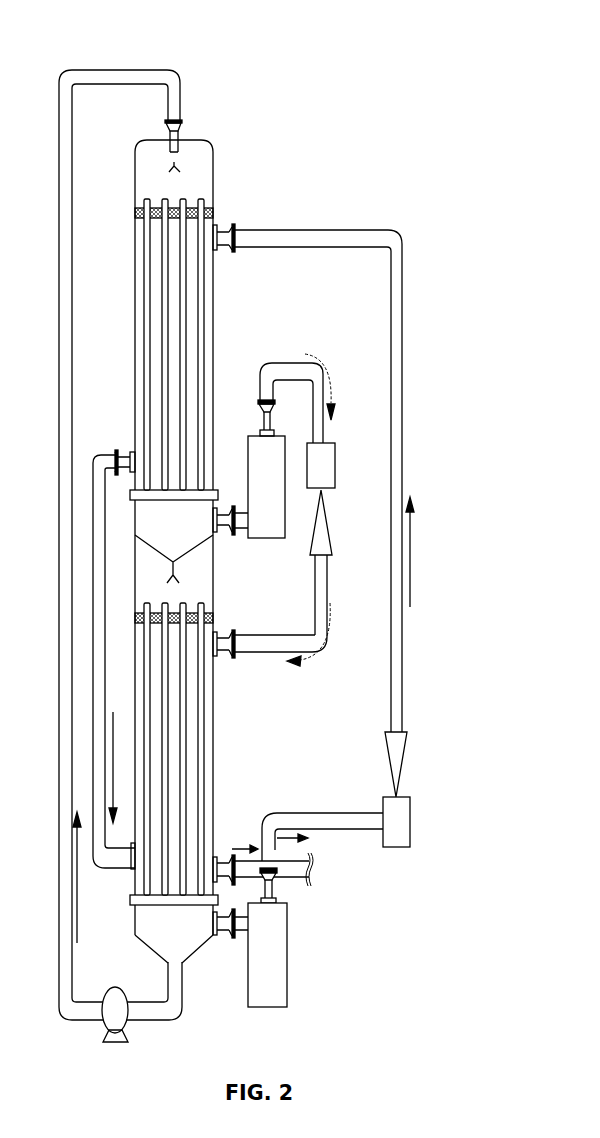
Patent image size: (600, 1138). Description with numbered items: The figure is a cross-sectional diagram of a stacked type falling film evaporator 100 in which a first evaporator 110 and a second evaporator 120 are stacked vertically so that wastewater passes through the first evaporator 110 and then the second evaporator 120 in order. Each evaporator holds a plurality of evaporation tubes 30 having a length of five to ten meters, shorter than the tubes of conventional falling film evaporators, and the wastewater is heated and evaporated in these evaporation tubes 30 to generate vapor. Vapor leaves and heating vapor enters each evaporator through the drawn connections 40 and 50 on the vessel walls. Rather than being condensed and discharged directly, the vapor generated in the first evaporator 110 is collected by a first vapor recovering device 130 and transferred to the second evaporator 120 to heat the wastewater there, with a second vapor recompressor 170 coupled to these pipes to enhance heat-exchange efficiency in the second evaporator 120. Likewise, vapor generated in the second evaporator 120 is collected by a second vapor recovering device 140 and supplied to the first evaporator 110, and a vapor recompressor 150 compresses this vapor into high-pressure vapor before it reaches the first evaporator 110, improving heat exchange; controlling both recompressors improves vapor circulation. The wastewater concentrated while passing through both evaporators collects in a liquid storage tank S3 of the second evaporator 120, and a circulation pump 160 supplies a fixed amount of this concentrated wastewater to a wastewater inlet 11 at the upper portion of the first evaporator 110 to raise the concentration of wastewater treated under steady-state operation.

The falling film evaporator 100 is at (263, 36).
The wastewater inlet 11 is at (181, 127).
The first evaporator 110 is at (228, 194).
The second evaporator 120 is at (220, 613).
The evaporation tubes 30 is at (147, 292).
The vapor outlet 40 is at (222, 252).
The heating medium inlet 50 is at (118, 455).
The first vapor recovering device 130 is at (281, 499).
The second vapor recovering device 140 is at (281, 970).
The vapor recompressor 150 is at (419, 725).
The circulation pump 160 is at (113, 998).
The second vapor recompressor 170 is at (337, 432).
The liquid storage tank S3 is at (187, 942).